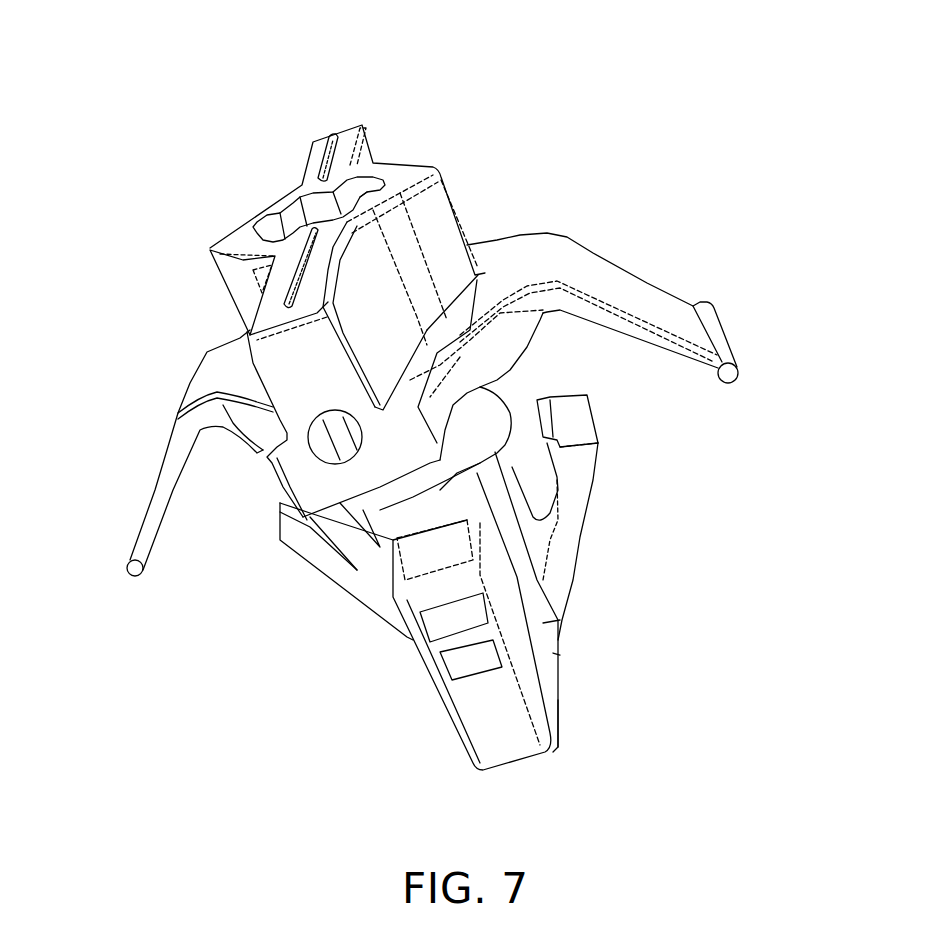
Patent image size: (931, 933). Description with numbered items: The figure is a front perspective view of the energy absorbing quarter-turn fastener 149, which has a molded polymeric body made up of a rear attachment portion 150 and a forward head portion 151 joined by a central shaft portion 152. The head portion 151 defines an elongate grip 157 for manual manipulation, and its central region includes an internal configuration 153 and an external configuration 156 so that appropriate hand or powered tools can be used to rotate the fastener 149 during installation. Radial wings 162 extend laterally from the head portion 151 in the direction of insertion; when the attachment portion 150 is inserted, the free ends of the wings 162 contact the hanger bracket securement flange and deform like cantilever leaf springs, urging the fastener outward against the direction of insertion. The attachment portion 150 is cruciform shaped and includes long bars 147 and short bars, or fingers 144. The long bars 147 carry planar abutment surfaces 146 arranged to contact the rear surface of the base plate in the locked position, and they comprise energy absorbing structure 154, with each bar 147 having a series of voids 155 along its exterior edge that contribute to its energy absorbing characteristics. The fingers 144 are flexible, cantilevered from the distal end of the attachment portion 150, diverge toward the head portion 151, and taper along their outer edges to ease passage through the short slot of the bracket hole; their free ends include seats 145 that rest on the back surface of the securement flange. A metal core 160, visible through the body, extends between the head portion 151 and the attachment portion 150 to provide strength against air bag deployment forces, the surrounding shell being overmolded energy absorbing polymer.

The short bars 144 is at (578, 507).
The seats 145 is at (583, 425).
The planar abutment surfaces 146 is at (480, 540).
The long bars 147 is at (550, 697).
The fastener 149 is at (476, 165).
The rear attachment portion 150 is at (570, 620).
The forward head portion 151 is at (207, 278).
The central shaft portion 152 is at (497, 407).
The internal configuration 153 is at (293, 207).
The energy absorbing structure 154 is at (433, 702).
The voids 155 is at (445, 623).
The external configuration 156 is at (427, 237).
The elongate grip 157 is at (345, 152).
The metal core 160 is at (333, 435).
The radial wings 162 is at (647, 302).